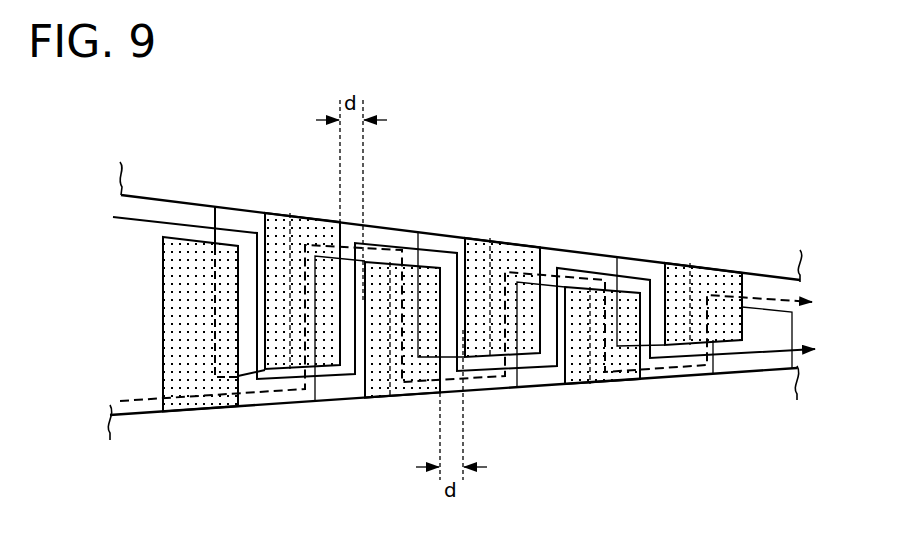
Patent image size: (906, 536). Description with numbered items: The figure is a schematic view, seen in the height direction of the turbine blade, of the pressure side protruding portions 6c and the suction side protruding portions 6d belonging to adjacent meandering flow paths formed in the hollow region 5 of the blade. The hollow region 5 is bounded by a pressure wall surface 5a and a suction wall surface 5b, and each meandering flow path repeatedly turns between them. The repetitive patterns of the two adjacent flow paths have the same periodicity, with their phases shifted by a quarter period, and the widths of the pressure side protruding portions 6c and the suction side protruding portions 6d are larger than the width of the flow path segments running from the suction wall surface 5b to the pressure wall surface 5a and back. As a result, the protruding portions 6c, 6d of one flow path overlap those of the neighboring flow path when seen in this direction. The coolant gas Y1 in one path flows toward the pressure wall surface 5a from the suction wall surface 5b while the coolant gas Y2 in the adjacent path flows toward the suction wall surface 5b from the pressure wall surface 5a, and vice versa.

The hollow region 5 is at (420, 301).
The pressure wall surface 5a is at (158, 198).
The suction wall surface 5b is at (118, 404).
The pressure side protruding portion 6c is at (253, 220).
The suction side protruding portion 6d is at (197, 404).
The coolant gas Y1 is at (802, 352).
The coolant gas Y2 is at (795, 293).